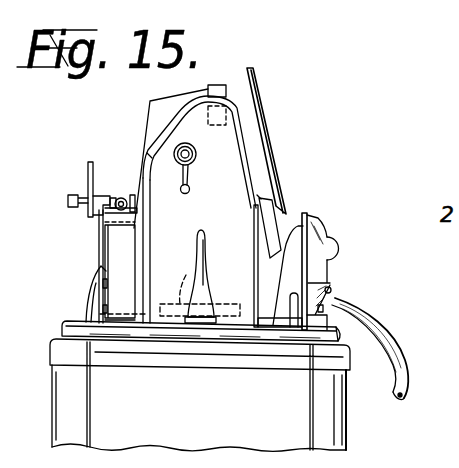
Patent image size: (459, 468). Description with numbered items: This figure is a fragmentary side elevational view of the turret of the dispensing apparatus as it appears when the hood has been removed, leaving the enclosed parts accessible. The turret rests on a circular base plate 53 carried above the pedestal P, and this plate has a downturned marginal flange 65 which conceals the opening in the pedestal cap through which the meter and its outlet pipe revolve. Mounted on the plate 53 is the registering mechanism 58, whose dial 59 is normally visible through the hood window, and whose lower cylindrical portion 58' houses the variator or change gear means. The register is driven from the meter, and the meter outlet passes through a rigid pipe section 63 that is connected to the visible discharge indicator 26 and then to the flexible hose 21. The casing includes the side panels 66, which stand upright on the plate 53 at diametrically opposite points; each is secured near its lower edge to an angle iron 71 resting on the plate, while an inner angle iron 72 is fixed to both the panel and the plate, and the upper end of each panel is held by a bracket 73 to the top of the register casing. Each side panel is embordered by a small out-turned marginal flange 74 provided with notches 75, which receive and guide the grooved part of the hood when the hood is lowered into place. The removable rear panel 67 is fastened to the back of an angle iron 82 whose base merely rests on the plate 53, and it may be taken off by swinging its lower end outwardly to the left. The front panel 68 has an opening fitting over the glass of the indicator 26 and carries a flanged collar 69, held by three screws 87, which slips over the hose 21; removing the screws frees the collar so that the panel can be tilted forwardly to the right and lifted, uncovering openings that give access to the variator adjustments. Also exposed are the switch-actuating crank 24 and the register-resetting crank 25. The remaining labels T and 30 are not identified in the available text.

The registering mechanism 58 is at (154, 158).
The out-turned marginal flange 74 is at (230, 121).
The side panels 66 is at (169, 250).
The bracket 73 is at (217, 85).
The dial 59 is at (265, 127).
The notches 75 is at (150, 157).
The tray plate T is at (299, 175).
The downturned marginal flange 65 is at (335, 334).
The base body 30 is at (200, 395).
The pedestal P is at (357, 434).
The register-resetting crank 25 is at (188, 163).
The switch-actuating crank 24 is at (70, 202).
The rear panel 67 is at (104, 248).
The angle iron 82 is at (92, 298).
The angle iron 71 is at (199, 258).
The inner angle iron 72 is at (170, 293).
The rigid pipe section 63 is at (288, 270).
The circular base plate 53 is at (272, 311).
The lower cylindrical portion 58' is at (295, 220).
The visible discharge indicator 26 is at (317, 255).
The front panel 68 is at (323, 251).
The screws 87 is at (330, 289).
The flanged collar 69 is at (344, 304).
The flexible hose 21 is at (393, 365).